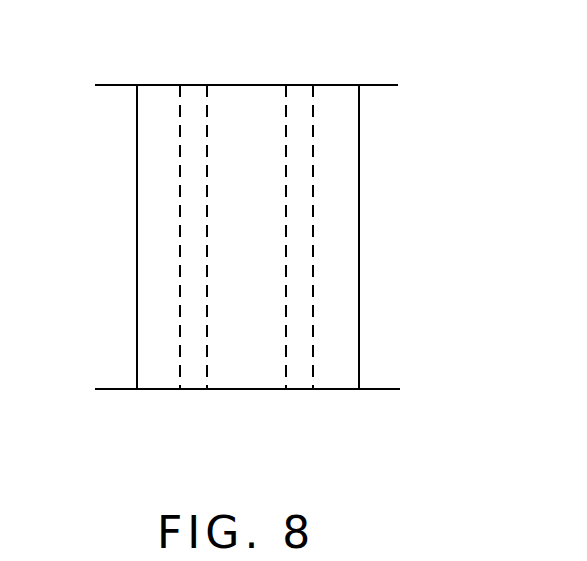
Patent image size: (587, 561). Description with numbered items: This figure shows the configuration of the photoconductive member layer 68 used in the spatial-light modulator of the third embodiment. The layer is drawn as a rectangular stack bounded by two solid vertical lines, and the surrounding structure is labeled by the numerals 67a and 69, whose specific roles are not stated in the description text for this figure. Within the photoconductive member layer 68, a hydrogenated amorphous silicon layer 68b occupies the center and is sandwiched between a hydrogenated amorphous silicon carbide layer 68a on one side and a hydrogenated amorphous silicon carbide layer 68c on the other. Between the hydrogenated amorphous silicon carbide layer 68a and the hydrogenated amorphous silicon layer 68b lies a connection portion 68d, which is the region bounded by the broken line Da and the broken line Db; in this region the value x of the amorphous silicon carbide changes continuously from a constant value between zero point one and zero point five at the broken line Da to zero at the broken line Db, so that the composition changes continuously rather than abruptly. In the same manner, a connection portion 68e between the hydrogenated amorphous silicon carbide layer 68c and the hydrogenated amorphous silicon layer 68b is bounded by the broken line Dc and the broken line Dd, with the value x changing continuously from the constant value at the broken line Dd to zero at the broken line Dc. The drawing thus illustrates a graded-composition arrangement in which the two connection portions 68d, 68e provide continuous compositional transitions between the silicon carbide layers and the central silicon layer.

The substrate layer 67a is at (118, 100).
The photoconductive member layer 68 is at (358, 47).
The edge line 69 is at (378, 95).
The hydrogenated amorphous silicon carbide layer 68a is at (153, 380).
The hydrogenated amorphous silicon layer 68b is at (245, 380).
The hydrogenated amorphous silicon carbide layer 68c is at (340, 380).
The connection portion 68d is at (212, 395).
The connection portion 68e is at (320, 395).
The broken line Da is at (180, 100).
The broken line Db is at (208, 100).
The broken line Dc is at (287, 100).
The broken line Dd is at (314, 100).